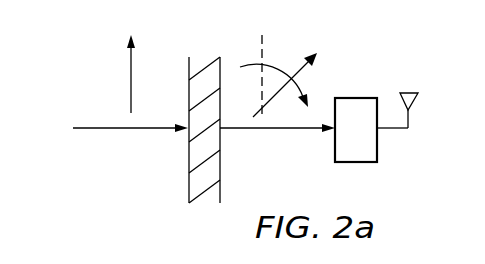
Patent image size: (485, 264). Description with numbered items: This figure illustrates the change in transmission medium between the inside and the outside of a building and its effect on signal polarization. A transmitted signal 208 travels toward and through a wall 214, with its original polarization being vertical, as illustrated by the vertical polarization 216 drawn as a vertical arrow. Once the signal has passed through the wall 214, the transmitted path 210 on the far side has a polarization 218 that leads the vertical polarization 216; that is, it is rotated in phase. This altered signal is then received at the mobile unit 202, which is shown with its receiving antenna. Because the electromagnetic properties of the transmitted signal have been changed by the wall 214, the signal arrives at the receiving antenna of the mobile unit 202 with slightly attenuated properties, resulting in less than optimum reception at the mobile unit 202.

The mobile unit 202 is at (355, 97).
The transmitted signal 208 is at (147, 130).
The transmitted path 210 is at (283, 131).
The wall 214 is at (199, 56).
The vertical polarization 216 is at (130, 78).
The polarization 218 is at (297, 64).